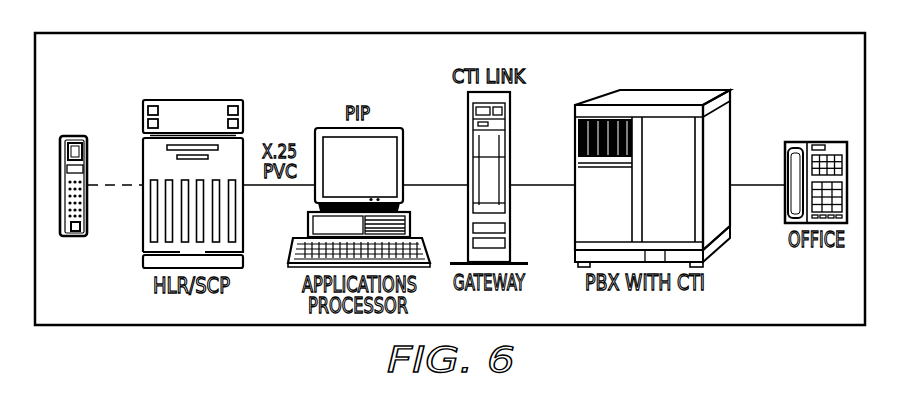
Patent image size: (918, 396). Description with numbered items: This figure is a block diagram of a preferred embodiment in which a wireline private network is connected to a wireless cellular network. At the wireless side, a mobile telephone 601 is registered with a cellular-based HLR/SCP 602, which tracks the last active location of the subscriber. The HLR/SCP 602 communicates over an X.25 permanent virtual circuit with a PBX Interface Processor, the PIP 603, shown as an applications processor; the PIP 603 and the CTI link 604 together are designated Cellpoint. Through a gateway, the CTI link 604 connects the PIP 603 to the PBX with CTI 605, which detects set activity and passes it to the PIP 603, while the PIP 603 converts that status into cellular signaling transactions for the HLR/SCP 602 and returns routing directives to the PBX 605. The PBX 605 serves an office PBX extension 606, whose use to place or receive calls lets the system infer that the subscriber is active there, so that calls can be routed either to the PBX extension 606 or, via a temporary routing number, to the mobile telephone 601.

The mobile telephone 601 is at (77, 136).
The HLR/SCP 602 is at (191, 100).
The PBX Interface Processor (PIP) 603 is at (378, 174).
The CTI link 604 is at (468, 110).
The PBX with CTI 605 is at (658, 90).
The PBX extension 606 is at (815, 142).